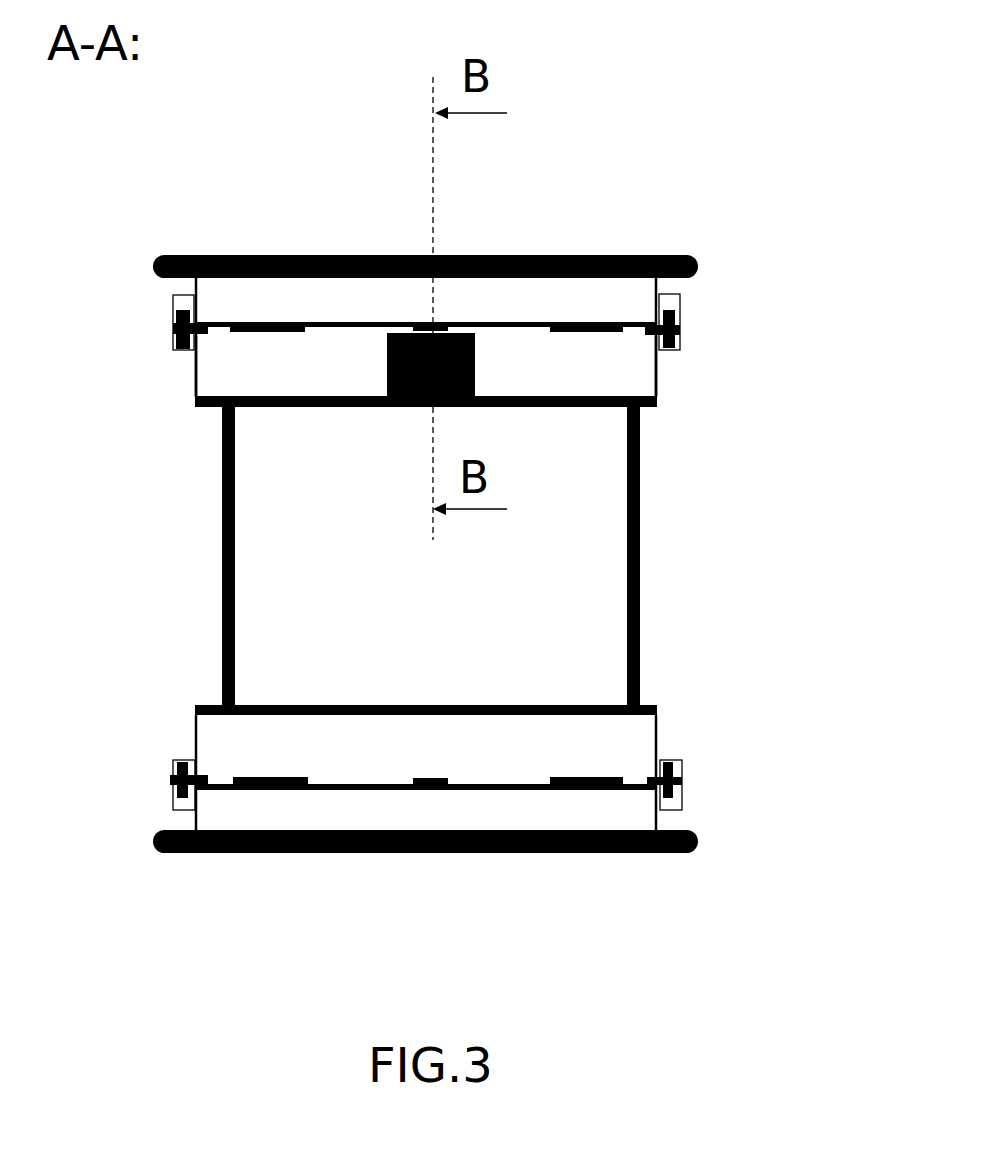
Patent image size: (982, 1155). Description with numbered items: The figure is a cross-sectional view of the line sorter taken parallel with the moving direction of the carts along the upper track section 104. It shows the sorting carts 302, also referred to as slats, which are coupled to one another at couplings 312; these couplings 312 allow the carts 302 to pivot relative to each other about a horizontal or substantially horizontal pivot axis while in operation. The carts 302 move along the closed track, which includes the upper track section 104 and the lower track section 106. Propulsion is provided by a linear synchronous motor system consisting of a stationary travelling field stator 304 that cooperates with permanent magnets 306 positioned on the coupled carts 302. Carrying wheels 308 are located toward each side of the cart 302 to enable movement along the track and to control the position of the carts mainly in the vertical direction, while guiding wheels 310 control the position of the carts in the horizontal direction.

The upper track section 104 is at (681, 377).
The lower track section 106 is at (686, 723).
The sorting cart 302 is at (235, 215).
The stationary travelling field stator 304 is at (387, 370).
The permanent magnet 306 is at (442, 320).
The carrying wheel 308 is at (178, 312).
The guiding wheel 310 is at (200, 343).
The coupling 312 is at (292, 310).